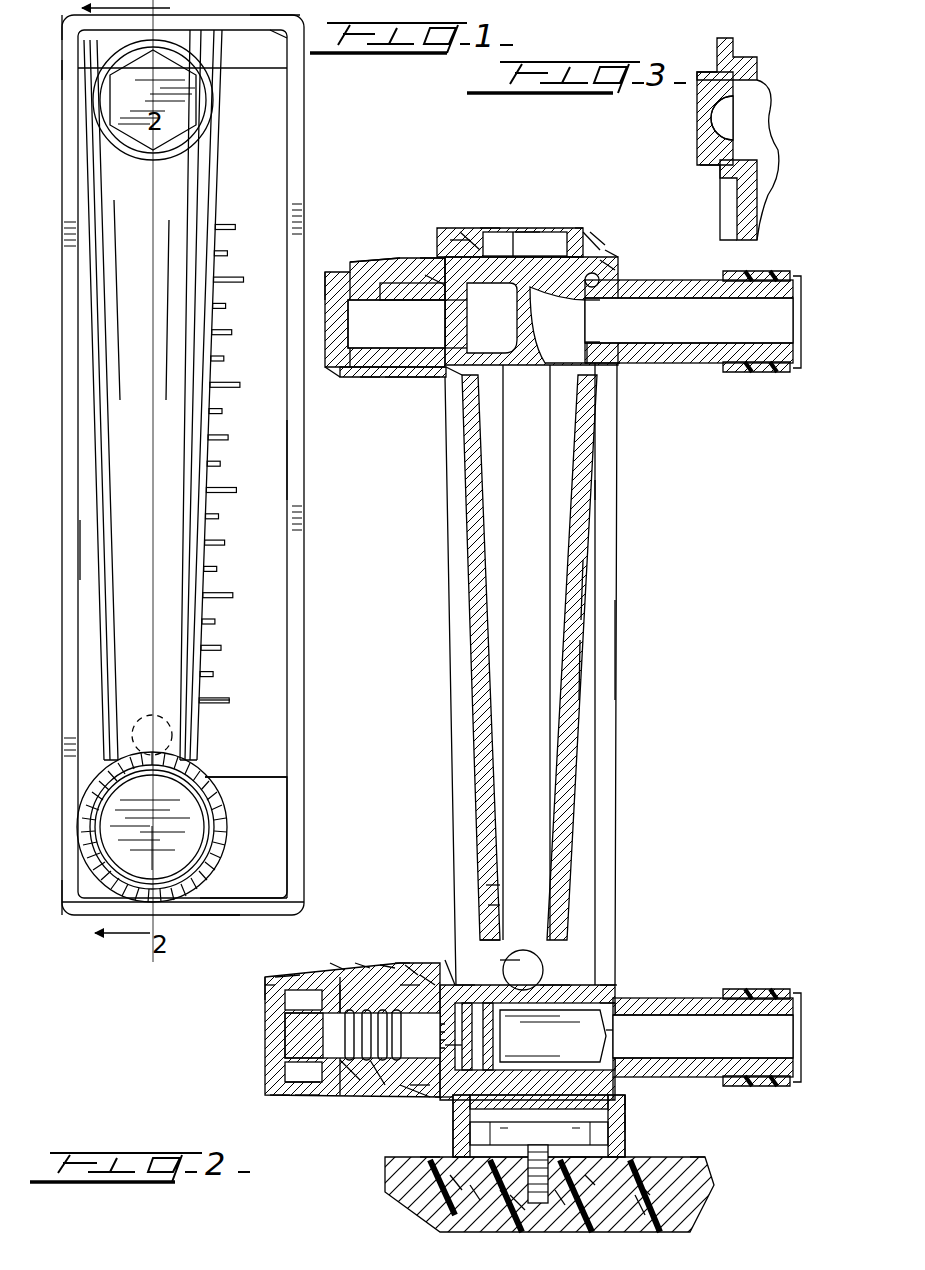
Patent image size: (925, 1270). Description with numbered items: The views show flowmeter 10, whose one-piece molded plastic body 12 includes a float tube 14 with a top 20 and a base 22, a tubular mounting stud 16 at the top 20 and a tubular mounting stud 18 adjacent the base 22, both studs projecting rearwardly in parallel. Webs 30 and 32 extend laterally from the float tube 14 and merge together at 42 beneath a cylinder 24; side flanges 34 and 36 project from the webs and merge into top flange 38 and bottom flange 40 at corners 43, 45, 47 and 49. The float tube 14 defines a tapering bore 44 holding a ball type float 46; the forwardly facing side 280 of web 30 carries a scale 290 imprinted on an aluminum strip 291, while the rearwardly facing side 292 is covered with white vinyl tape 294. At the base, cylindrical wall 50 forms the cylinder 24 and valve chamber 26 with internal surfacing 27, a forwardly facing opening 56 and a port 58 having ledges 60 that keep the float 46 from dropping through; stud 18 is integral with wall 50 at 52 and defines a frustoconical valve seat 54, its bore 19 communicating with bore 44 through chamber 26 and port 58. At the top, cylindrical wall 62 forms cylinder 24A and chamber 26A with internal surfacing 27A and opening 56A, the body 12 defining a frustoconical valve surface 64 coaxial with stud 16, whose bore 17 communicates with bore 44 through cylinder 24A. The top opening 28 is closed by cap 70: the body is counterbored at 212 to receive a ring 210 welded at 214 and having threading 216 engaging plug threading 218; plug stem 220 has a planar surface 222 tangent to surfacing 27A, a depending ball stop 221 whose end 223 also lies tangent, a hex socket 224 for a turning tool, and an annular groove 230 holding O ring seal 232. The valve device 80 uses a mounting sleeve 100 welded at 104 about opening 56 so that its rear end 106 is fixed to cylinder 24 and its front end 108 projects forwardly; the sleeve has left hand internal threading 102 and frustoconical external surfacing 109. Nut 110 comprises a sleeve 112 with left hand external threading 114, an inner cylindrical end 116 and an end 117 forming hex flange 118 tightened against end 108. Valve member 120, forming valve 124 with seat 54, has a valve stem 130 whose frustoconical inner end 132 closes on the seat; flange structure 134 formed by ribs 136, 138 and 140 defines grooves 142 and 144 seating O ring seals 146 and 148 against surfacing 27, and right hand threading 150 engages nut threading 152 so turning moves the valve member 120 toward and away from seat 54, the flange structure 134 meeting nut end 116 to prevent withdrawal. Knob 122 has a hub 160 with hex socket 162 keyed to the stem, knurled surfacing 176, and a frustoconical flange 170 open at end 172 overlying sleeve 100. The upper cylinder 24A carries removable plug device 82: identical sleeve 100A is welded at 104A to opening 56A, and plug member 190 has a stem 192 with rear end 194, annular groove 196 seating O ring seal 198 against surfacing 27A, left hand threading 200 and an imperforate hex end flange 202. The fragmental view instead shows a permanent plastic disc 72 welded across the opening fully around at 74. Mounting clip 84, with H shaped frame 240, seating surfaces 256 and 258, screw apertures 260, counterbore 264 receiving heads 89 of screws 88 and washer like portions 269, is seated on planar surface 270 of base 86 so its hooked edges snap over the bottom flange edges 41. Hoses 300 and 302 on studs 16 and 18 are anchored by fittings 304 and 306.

In FIG. 1, the flowmeter 10 is at (108, 950).
In FIG. 2, the flowmeter 10 is at (640, 690).
In FIG. 1, the body 12 is at (303, 598).
In FIG. 2, the body 12 is at (622, 552).
In FIG. 2, the float tube 14 is at (586, 640).
In FIG. 2, the tubular mounting stud 16 is at (660, 282).
In FIG. 2, the bore 17 is at (690, 330).
In FIG. 2, the tubular mounting stud 18 is at (662, 1000).
In FIG. 2, the bore 19 is at (692, 1016).
In FIG. 2, the float tube top 20 is at (612, 392).
In FIG. 2, the float tube base 22 is at (550, 990).
In FIG. 2, the cylinder 24 is at (462, 984).
In FIG. 3, the additional cylinder 24A is at (745, 170).
In FIG. 2, the additional cylinder 24A is at (414, 380).
In FIG. 2, the valve chamber 26 is at (582, 1164).
In FIG. 3, the cylindrical chamber 26A is at (760, 128).
In FIG. 2, the cylindrical chamber 26A is at (450, 380).
In FIG. 2, the internal surfacing 27 is at (452, 975).
In FIG. 2, the internal surfacing 27A is at (500, 365).
In FIG. 2, the opening 28 is at (520, 232).
In FIG. 1, the web 30 is at (288, 796).
In FIG. 1, the web 32 is at (86, 552).
In FIG. 1, the side flange 34 is at (300, 470).
In FIG. 1, the side flange 36 is at (64, 475).
In FIG. 2, the side flange 36 is at (462, 598).
In FIG. 1, the top flange 38 is at (266, 40).
In FIG. 2, the bottom flange 40 is at (660, 1182).
In FIG. 1, the bottom flange side edges 41 is at (220, 915).
In FIG. 2, the bottom flange side edges 41 is at (628, 1134).
In FIG. 2, the web merging region 42 is at (537, 1204).
In FIG. 1, the corner 43 is at (270, 30).
In FIG. 2, the bore 44 is at (597, 492).
In FIG. 1, the corner 45 is at (287, 912).
In FIG. 1, the ball type float 46 is at (150, 718).
In FIG. 2, the ball type float 46 is at (545, 972).
In FIG. 1, the corner 47 is at (64, 918).
In FIG. 1, the corner 49 is at (68, 20).
In FIG. 2, the cylindrical wall 50 is at (425, 1112).
In FIG. 2, the stud junction 52 is at (606, 1002).
In FIG. 2, the frustoconical valve seat 54 is at (620, 1072).
In FIG. 2, the forwardly facing opening 56 is at (378, 1095).
In FIG. 3, the forwardly facing opening 56A is at (700, 168).
In FIG. 2, the forwardly facing opening 56A is at (396, 324).
In FIG. 2, the port 58 is at (494, 930).
In FIG. 2, the dimples or ledges 60 is at (612, 978).
In FIG. 3, the cylindrical wall 62 is at (722, 183).
In FIG. 2, the cylindrical wall 62 is at (432, 276).
In FIG. 2, the frustoconical valve surface 64 is at (599, 282).
In FIG. 2, the cap 70 is at (568, 248).
In FIG. 3, the permanent plug plastic disc 72 is at (696, 118).
In FIG. 3, the weld 74 is at (706, 70).
In FIG. 2, the valve assembly or device 80 is at (200, 1054).
In FIG. 2, the plug assembly or device 82 is at (340, 380).
In FIG. 2, the supporting clip device 84 is at (635, 1120).
In FIG. 2, the mounting base 86 is at (640, 1192).
In FIG. 2, the body screws 88 is at (518, 1204).
In FIG. 2, the screw heads 89 is at (558, 1206).
In FIG. 2, the mounting sleeve 100 is at (420, 980).
In FIG. 1, the mounting sleeve 100A is at (200, 148).
In FIG. 2, the mounting sleeve 100A is at (360, 262).
In FIG. 2, the internal threading 102 is at (388, 966).
In FIG. 2, the ultrasonic weld 104 is at (404, 980).
In FIG. 2, the ultrasonic weld 104A is at (398, 378).
In FIG. 2, the sleeve rear end 106 is at (418, 1098).
In FIG. 1, the sleeve front end 108 is at (195, 112).
In FIG. 2, the sleeve front end 108 is at (360, 962).
In FIG. 2, the external surfacing 109 is at (345, 985).
In FIG. 2, the nut 110 is at (288, 1082).
In FIG. 2, the nut sleeve 112 is at (306, 1100).
In FIG. 2, the external threading 114 is at (355, 1086).
In FIG. 2, the inner cylindrical end 116 is at (460, 1045).
In FIG. 2, the nut end 117 is at (280, 976).
In FIG. 2, the hex shaped flange 118 is at (280, 1098).
In FIG. 2, the valve member 120 is at (430, 1160).
In FIG. 1, the knob 122 is at (198, 770).
In FIG. 2, the knob 122 is at (262, 988).
In FIG. 2, the valve 124 is at (628, 1043).
In FIG. 2, the valve stem 130 is at (618, 1012).
In FIG. 2, the inner end 132 is at (622, 1030).
In FIG. 2, the flange structure 134 is at (496, 886).
In FIG. 2, the rib 136 is at (520, 958).
In FIG. 2, the rib 138 is at (495, 1050).
In FIG. 1, the rib 140 is at (236, 915).
In FIG. 2, the rib 140 is at (553, 1036).
In FIG. 2, the groove 142 is at (460, 1030).
In FIG. 2, the groove 144 is at (475, 1020).
In FIG. 2, the O ring seal 146 is at (442, 1102).
In FIG. 2, the O ring seal 148 is at (494, 906).
In FIG. 2, the external threading 150 is at (292, 1056).
In FIG. 2, the internal threading 152 is at (402, 960).
In FIG. 2, the hub portion 160 is at (266, 1000).
In FIG. 2, the hex shaped socket 162 is at (290, 1030).
In FIG. 1, the encompassing flange 170 is at (212, 838).
In FIG. 2, the encompassing flange 170 is at (336, 962).
In FIG. 2, the flange open end 172 is at (412, 964).
In FIG. 1, the knurled surfacing 176 is at (215, 812).
In FIG. 2, the plug member 190 is at (330, 262).
In FIG. 2, the stem 192 is at (386, 305).
In FIG. 2, the stem rear end 194 is at (448, 310).
In FIG. 2, the annular groove 196 is at (442, 332).
In FIG. 2, the O ring seal 198 is at (440, 296).
In FIG. 2, the external threading 200 is at (368, 378).
In FIG. 1, the hex shaped end flange 202 is at (192, 130).
In FIG. 2, the hex shaped end flange 202 is at (337, 268).
In FIG. 2, the ring 210 is at (590, 240).
In FIG. 2, the counterbore 212 is at (606, 252).
In FIG. 2, the weld 214 is at (472, 246).
In FIG. 2, the ring threading 216 is at (492, 230).
In FIG. 2, the plug threading 218 is at (582, 232).
In FIG. 2, the stem portion 220 is at (590, 312).
In FIG. 2, the ball stop 221 is at (528, 362).
In FIG. 2, the annular planar surface 222 is at (590, 330).
In FIG. 2, the depending end 223 is at (600, 366).
In FIG. 2, the hex shaped socket 224 is at (530, 234).
In FIG. 2, the annular groove 230 is at (604, 266).
In FIG. 2, the O ring seal 232 is at (458, 248).
In FIG. 2, the frame structure 240 is at (632, 1102).
In FIG. 2, the seating surface 256 is at (458, 1184).
In FIG. 2, the seating surface 258 is at (640, 1200).
In FIG. 2, the screw receiving apertures 260 is at (505, 1198).
In FIG. 2, the counterbore 264 is at (478, 1192).
In FIG. 2, the washer like portions 269 is at (590, 1180).
In FIG. 2, the mounting surface 270 is at (684, 1162).
In FIG. 1, the forwardly facing side 280 is at (288, 870).
In FIG. 1, the scale 290 is at (258, 575).
In FIG. 1, the aluminum strip 291 is at (262, 700).
In FIG. 2, the rearwardly facing side 292 is at (578, 606).
In FIG. 2, the white vinyl tape 294 is at (582, 682).
In FIG. 2, the flexible hose 300 is at (776, 373).
In FIG. 2, the flexible hose 302 is at (792, 1085).
In FIG. 2, the clamp device or fitting 304 is at (755, 272).
In FIG. 2, the fitting 306 is at (764, 1088).